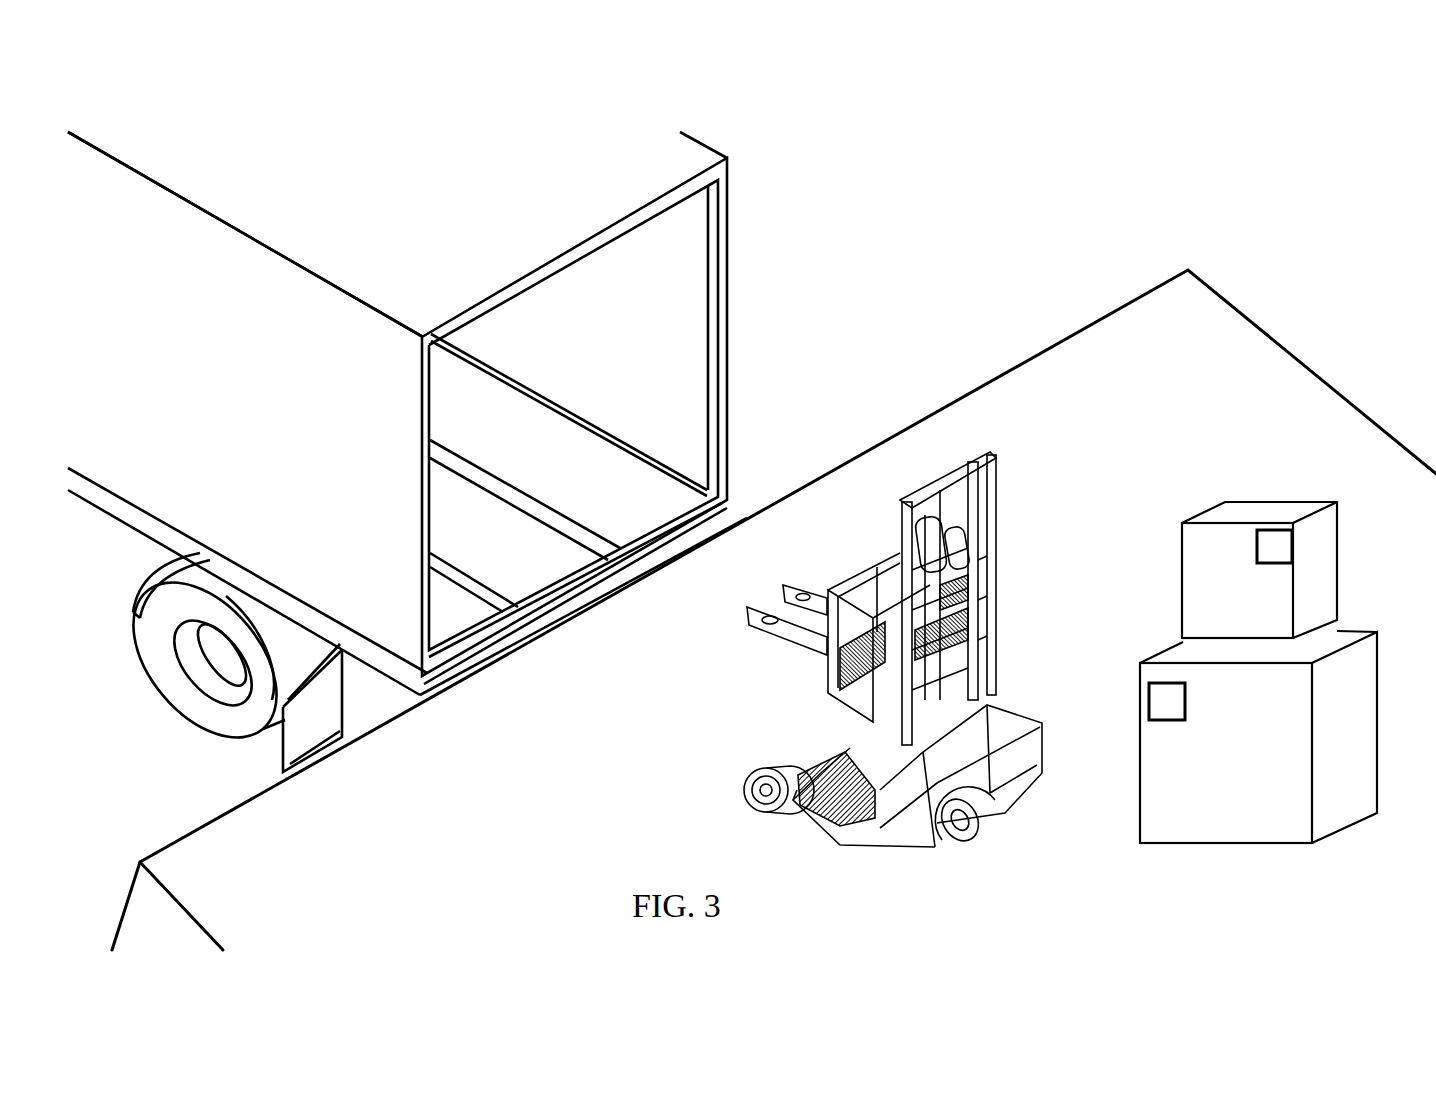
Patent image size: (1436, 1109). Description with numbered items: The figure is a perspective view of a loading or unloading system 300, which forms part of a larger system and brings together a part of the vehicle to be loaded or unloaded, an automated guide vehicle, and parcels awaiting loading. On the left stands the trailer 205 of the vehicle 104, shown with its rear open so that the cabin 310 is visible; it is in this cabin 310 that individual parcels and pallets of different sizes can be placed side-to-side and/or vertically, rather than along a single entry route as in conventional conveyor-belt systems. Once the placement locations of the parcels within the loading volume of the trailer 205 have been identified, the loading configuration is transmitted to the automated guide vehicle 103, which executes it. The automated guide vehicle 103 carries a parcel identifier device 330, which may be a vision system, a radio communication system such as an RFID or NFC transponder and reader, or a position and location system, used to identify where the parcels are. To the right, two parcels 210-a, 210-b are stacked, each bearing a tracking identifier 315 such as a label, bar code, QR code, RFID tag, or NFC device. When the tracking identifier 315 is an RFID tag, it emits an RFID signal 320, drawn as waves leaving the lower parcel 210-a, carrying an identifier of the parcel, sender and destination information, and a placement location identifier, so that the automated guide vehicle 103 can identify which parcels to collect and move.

The loading or unloading system 300 is at (1304, 89).
The vehicle 104 is at (451, 425).
The trailer 205 is at (306, 268).
The cabin 310 is at (420, 470).
The RFID signal 320 is at (1237, 307).
The parcel identifier device 330 is at (858, 612).
The automated guide vehicle 103 is at (893, 677).
The tracking identifier 315 is at (1185, 690).
The parcel 210-a is at (1258, 737).
The parcel 210-b is at (1280, 567).